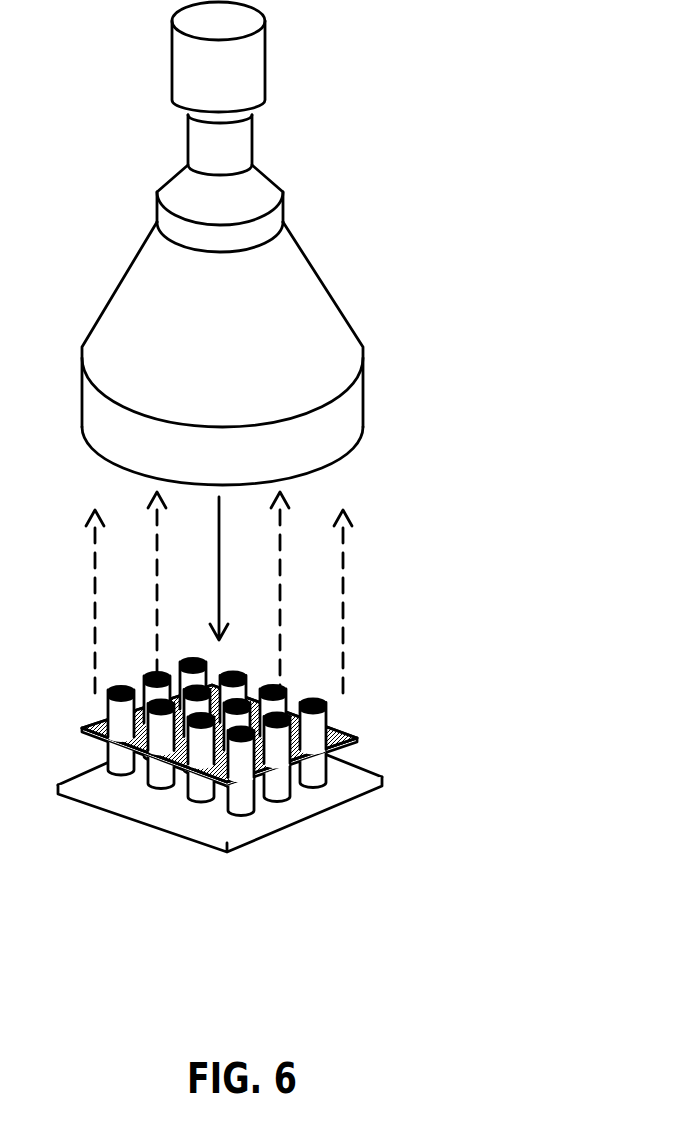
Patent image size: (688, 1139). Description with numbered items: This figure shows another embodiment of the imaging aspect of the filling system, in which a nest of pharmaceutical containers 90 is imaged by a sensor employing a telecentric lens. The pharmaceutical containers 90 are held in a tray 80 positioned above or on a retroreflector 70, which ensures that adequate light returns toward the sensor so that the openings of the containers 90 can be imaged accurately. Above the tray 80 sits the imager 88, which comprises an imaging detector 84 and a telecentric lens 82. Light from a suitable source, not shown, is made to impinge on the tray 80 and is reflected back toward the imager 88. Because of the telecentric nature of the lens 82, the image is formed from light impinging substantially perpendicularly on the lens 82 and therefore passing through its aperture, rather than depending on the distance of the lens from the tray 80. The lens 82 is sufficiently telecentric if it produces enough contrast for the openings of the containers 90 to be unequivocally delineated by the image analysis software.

The retroreflector 70 is at (350, 807).
The tray 80 is at (358, 738).
The pharmaceutical containers 90 is at (325, 697).
The imager 88 is at (324, 243).
The imaging detector 84 is at (243, 62).
The telecentric lens 82 is at (298, 307).